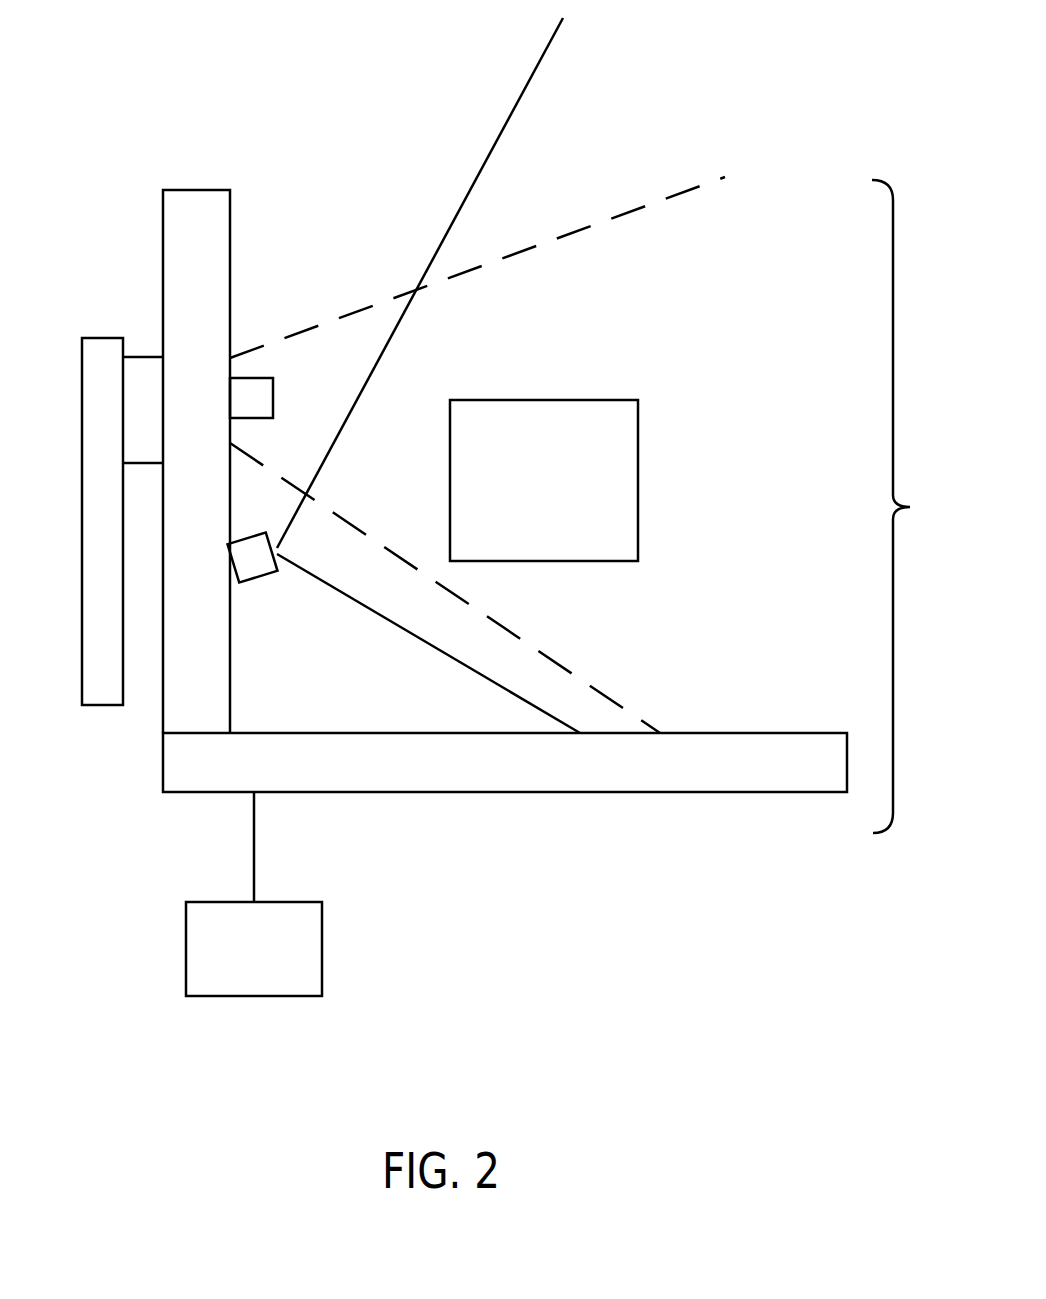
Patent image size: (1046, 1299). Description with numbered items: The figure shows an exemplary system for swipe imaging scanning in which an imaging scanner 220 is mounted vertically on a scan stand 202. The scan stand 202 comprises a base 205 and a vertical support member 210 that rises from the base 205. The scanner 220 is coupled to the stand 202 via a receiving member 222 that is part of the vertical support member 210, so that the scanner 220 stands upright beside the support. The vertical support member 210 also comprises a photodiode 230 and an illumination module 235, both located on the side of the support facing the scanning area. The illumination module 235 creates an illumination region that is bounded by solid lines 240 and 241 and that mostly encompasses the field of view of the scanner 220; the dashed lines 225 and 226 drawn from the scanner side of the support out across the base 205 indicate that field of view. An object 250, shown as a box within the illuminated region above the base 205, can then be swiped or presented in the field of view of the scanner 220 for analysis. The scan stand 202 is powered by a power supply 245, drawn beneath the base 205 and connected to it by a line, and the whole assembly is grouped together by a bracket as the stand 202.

The scan stand 202 is at (914, 506).
The base 205 is at (503, 793).
The vertical support member 210 is at (198, 188).
The scanner 220 is at (102, 707).
The receiving member 222 is at (142, 355).
The upper field-of-view boundary 225 is at (705, 185).
The lower field-of-view boundary 226 is at (597, 682).
The photodiode 230 is at (273, 393).
The illumination module 235 is at (257, 578).
The solid line 240 is at (515, 108).
The solid line 241 is at (378, 615).
The power supply 245 is at (322, 947).
The object 250 is at (543, 400).